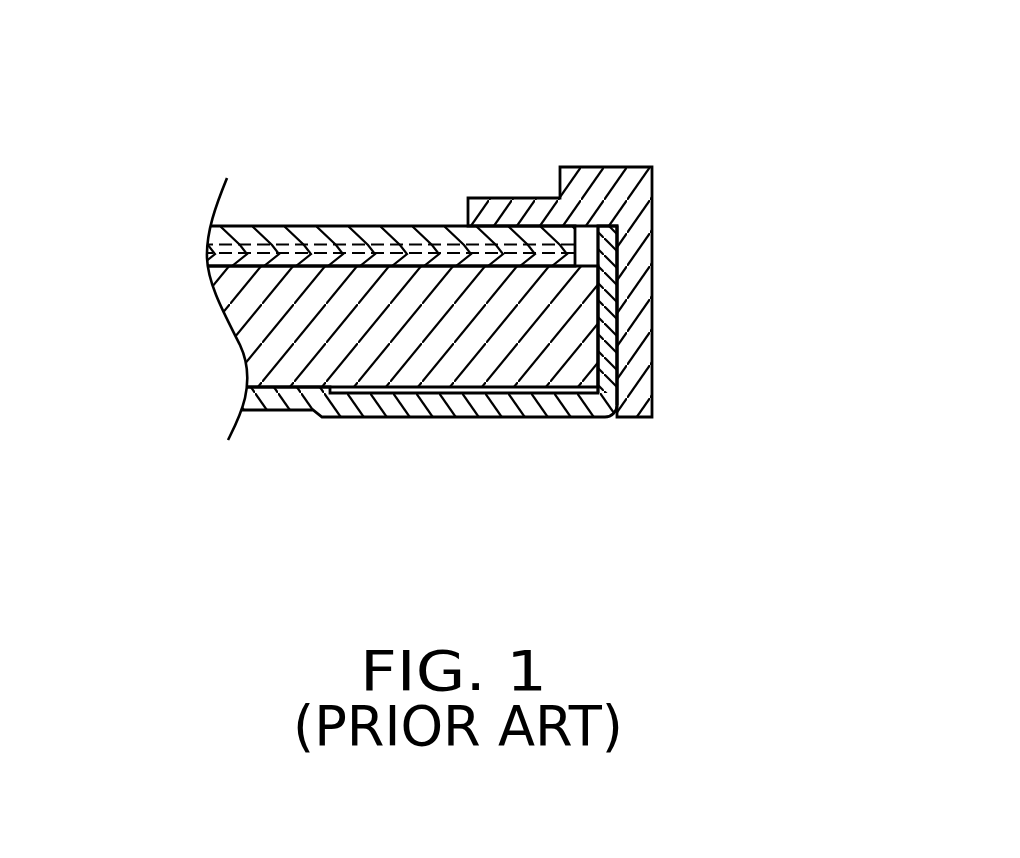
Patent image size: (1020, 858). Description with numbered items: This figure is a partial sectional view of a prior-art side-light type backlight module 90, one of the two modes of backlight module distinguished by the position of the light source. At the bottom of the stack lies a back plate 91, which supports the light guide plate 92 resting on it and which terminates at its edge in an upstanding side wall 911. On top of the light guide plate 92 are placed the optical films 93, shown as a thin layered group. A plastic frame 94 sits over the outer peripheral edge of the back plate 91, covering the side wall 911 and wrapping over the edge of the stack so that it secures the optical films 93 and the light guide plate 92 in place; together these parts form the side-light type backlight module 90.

The backlight module 90 is at (734, 119).
The back plate 91 is at (508, 408).
The side wall 911 is at (600, 305).
The light guide plate 92 is at (267, 343).
The optical films 93 is at (217, 248).
The plastic frame 94 is at (633, 405).